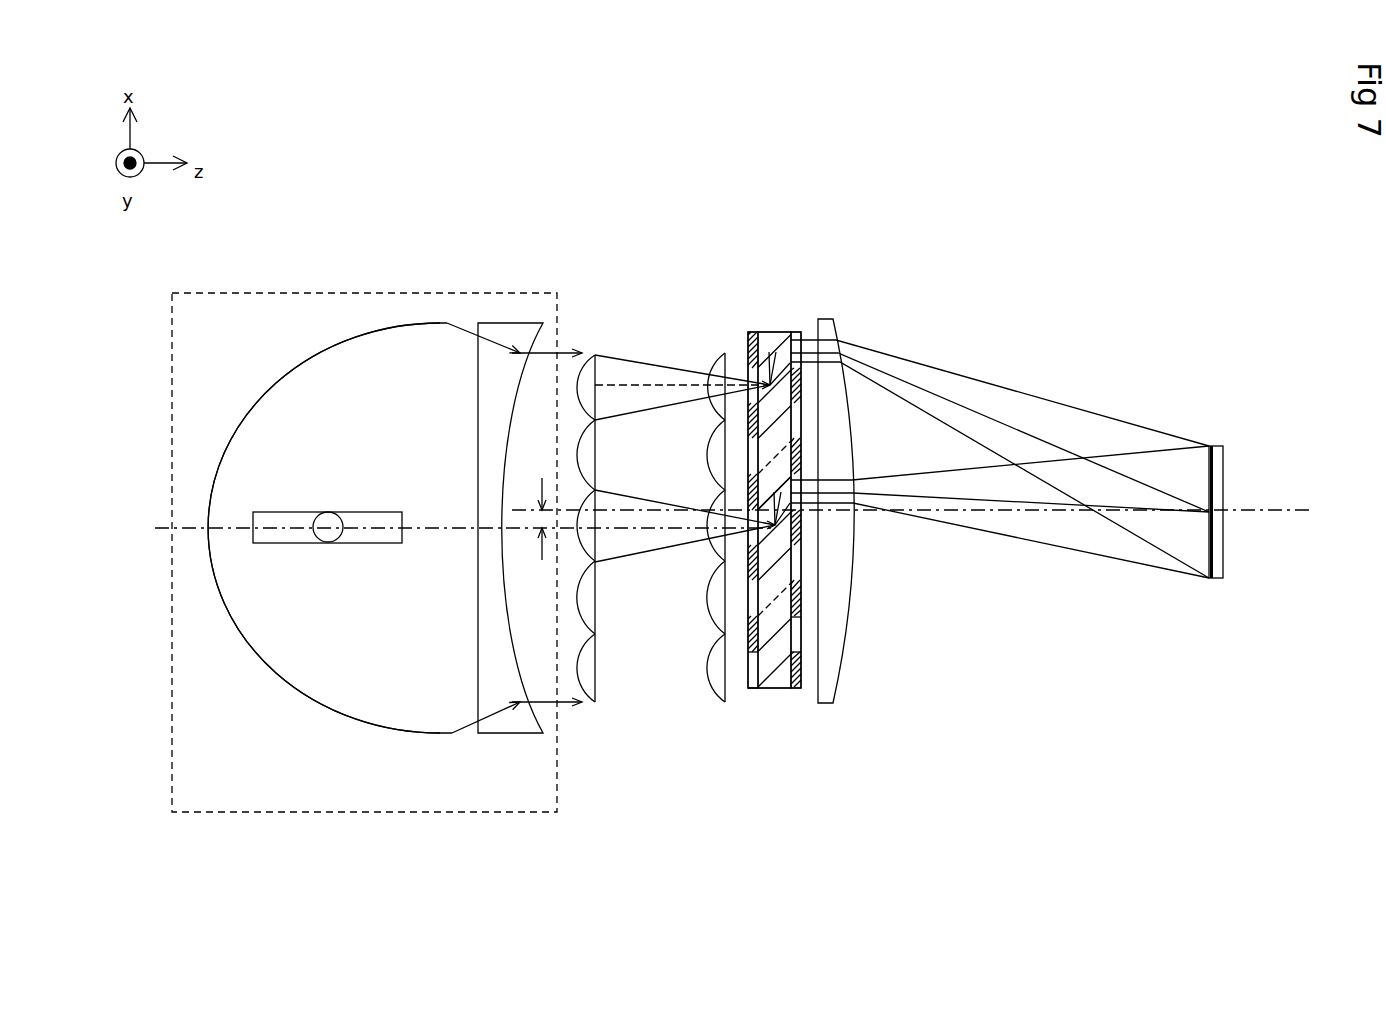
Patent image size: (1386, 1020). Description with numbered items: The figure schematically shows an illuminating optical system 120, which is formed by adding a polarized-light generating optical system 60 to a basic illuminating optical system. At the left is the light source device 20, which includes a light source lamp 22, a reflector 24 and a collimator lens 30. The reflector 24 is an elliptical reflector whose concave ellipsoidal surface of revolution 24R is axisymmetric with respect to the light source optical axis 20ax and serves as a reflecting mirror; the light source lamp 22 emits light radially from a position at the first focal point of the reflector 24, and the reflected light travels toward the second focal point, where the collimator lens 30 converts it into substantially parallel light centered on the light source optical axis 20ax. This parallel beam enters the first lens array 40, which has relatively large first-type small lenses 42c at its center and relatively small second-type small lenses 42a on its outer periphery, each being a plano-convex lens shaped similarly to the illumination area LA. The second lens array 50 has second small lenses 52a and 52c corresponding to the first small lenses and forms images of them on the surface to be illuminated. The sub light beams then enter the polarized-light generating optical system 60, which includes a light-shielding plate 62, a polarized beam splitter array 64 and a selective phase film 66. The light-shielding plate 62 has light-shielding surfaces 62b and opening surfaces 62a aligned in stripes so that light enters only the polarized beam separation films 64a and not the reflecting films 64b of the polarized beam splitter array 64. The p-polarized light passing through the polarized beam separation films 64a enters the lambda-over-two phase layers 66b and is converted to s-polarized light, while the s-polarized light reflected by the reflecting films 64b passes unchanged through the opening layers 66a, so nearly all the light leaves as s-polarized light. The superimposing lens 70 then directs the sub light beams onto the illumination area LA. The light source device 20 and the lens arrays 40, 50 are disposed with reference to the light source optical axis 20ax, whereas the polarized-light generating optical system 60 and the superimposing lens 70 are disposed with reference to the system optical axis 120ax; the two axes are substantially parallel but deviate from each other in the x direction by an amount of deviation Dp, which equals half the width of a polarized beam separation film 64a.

The illuminating optical system 120 is at (337, 189).
The light source device 20 is at (453, 293).
The light source lamp 22 is at (377, 543).
The reflector 24 is at (257, 401).
The ellipsoidal surface of revolution 24R is at (255, 642).
The collimator lens 30 is at (512, 733).
The first lens array 40 is at (620, 492).
The second-type small lenses 42a is at (590, 656).
The first-type small lenses 42c is at (597, 587).
The second lens array 50 is at (695, 491).
The second small lenses 52a is at (713, 683).
The second small lenses 52c is at (713, 618).
The polarized-light generating optical system 60 is at (796, 522).
The light-shielding plate 62 is at (728, 567).
The opening surfaces 62a is at (746, 675).
The light-shielding surfaces 62b is at (747, 632).
The polarized beam splitter array 64 is at (834, 567).
The polarized beam separation films 64a is at (805, 612).
The reflecting films 64b is at (807, 565).
The selective phase film 66 is at (846, 566).
The opening layers 66a is at (805, 663).
The lambda/2 phase layers 66b is at (818, 697).
The superimposing lens 70 is at (822, 319).
The illumination area LA is at (1216, 446).
The light source optical axis 20ax is at (154, 521).
The system optical axis 120ax is at (1281, 517).
The amount of deviation Dp is at (542, 560).